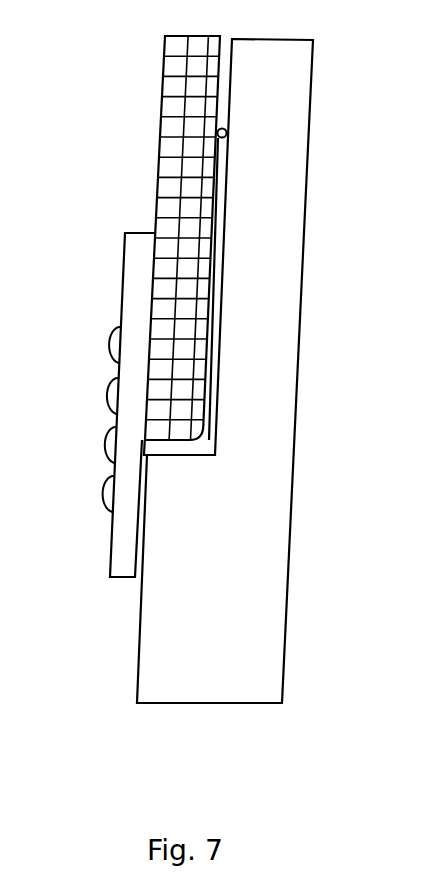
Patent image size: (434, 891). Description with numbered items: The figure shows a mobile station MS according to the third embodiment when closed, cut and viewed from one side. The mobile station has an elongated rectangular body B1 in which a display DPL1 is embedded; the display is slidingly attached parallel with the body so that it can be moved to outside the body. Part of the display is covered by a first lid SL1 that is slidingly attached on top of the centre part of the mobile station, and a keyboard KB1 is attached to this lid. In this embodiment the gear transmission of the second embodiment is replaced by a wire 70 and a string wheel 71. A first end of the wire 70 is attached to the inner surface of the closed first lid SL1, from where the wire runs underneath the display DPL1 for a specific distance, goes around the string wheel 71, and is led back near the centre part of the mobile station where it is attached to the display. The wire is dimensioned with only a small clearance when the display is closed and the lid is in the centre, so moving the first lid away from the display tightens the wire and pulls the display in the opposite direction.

The mobile station MS is at (181, 399).
The body B1 is at (139, 643).
The keyboard KB1 is at (112, 510).
The first lid SL1 is at (113, 472).
The wire 70 is at (215, 418).
The string wheel 71 is at (226, 133).
The display DPL1 is at (159, 162).